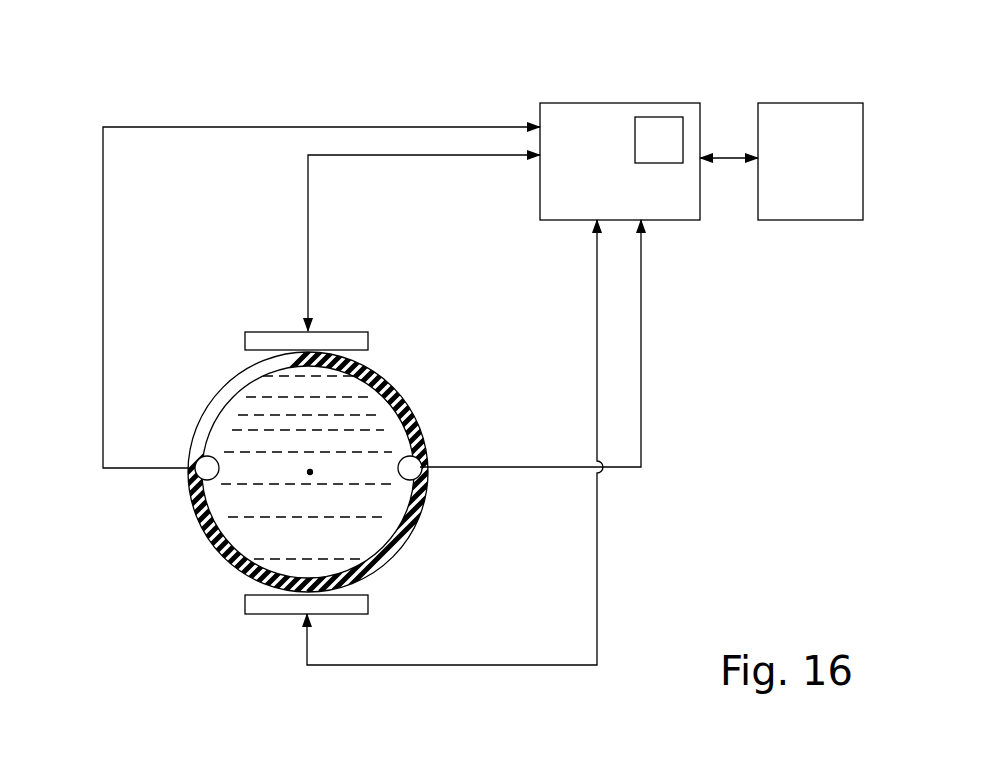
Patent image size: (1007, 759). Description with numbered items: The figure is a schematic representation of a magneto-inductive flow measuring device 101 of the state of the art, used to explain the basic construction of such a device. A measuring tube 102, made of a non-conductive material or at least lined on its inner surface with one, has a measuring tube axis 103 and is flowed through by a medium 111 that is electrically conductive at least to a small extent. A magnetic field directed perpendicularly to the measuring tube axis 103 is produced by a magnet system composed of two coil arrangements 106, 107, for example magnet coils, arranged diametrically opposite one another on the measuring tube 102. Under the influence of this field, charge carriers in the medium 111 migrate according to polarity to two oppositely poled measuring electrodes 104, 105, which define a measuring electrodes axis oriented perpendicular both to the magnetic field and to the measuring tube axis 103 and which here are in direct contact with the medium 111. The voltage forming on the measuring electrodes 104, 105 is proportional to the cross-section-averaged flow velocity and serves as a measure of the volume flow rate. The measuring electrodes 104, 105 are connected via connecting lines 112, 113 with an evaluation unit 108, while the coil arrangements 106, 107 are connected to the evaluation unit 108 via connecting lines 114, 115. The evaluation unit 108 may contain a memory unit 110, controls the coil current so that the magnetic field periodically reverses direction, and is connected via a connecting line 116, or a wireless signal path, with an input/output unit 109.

The flow measuring device 101 is at (180, 582).
The measuring tube 102 is at (223, 393).
The measuring tube axis 103 is at (308, 473).
The measuring electrode 104 is at (427, 455).
The measuring electrode 105 is at (195, 453).
The coil arrangement 106 is at (340, 333).
The coil arrangement 107 is at (267, 604).
The evaluation unit 108 is at (604, 170).
The input/output unit 109 is at (834, 170).
The memory unit 110 is at (662, 133).
The medium 111 is at (375, 525).
The connecting line 112 is at (642, 358).
The connecting line 113 is at (103, 293).
The connecting line 114 is at (597, 570).
The connecting line 115 is at (308, 210).
The connecting line 116 is at (727, 156).